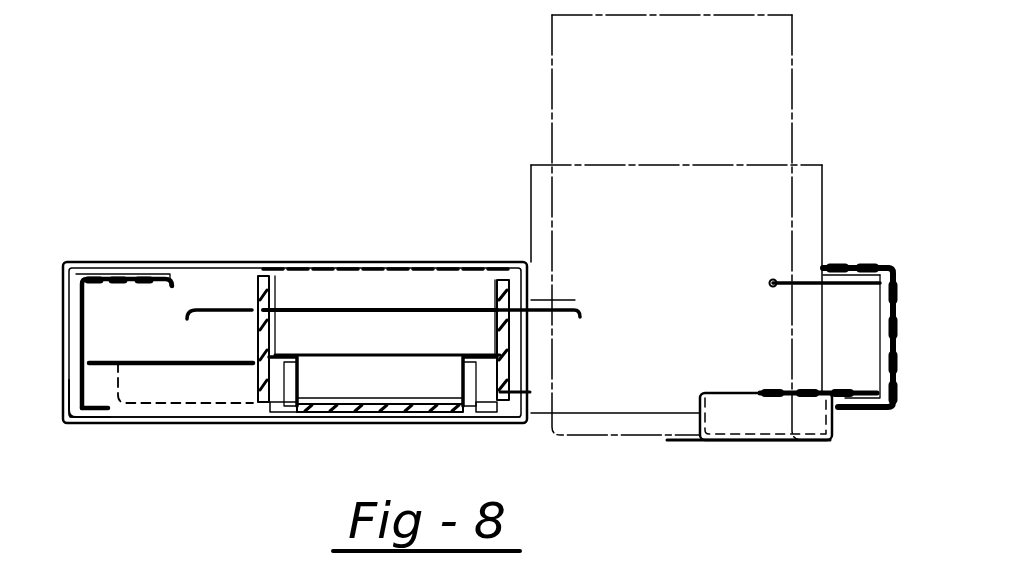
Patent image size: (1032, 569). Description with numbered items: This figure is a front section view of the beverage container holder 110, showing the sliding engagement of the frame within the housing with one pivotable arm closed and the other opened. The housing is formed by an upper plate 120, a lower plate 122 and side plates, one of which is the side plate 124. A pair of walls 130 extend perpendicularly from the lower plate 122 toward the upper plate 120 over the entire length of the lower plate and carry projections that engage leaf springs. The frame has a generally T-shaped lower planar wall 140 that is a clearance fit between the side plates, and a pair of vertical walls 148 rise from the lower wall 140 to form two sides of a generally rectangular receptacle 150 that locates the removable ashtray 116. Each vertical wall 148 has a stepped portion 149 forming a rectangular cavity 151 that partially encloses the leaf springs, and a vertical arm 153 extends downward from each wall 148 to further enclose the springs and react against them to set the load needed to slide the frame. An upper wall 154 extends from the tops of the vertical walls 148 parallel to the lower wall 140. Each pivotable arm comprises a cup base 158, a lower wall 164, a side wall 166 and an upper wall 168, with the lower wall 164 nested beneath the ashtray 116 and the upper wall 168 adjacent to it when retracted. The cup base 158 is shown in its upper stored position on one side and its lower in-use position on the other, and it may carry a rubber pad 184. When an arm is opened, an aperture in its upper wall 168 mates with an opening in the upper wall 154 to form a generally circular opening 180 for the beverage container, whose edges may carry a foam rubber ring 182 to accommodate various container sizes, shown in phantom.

The beverage container holder 110 is at (262, 152).
The ashtray 116 is at (421, 413).
The upper plate 120 is at (122, 263).
The lower plate 122 is at (144, 425).
The side plate 124 is at (72, 340).
The wall 130 is at (267, 402).
The lower planar wall 140 is at (348, 424).
The vertical wall 148 is at (280, 292).
The stepped portion 149 is at (302, 302).
The rectangular receptacle 150 is at (420, 345).
The rectangular cavity 151 is at (261, 418).
The vertical arm 153 is at (257, 380).
The upper wall 154 is at (248, 284).
The cup base 158 is at (60, 394).
The lower wall 164 is at (98, 415).
The side wall 166 is at (62, 335).
The upper wall 168 is at (97, 268).
The circular opening 180 is at (710, 367).
The foam rubber ring 182 is at (572, 310).
The rubber pad 184 is at (183, 424).